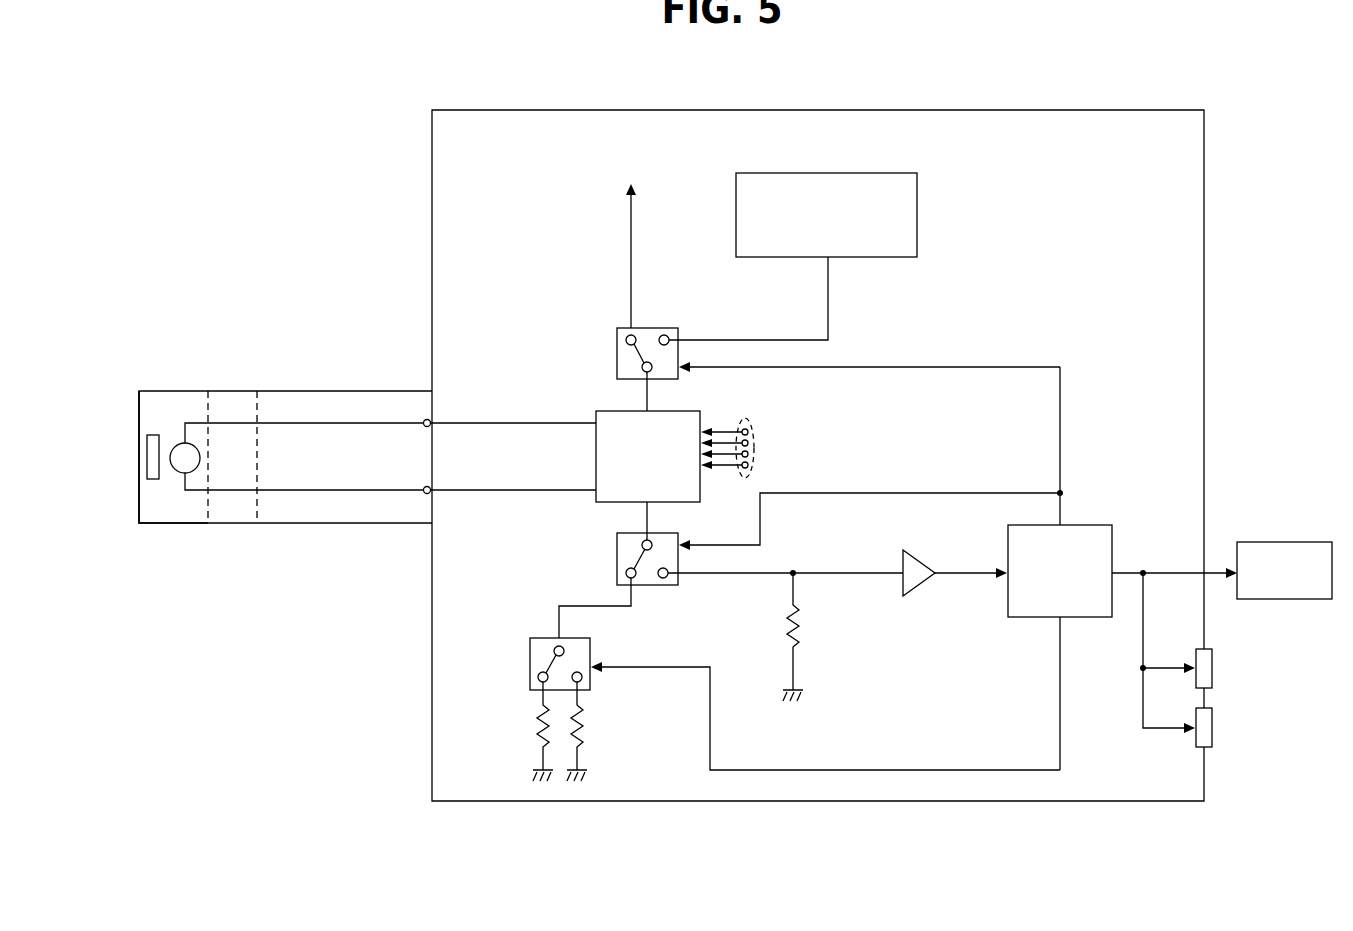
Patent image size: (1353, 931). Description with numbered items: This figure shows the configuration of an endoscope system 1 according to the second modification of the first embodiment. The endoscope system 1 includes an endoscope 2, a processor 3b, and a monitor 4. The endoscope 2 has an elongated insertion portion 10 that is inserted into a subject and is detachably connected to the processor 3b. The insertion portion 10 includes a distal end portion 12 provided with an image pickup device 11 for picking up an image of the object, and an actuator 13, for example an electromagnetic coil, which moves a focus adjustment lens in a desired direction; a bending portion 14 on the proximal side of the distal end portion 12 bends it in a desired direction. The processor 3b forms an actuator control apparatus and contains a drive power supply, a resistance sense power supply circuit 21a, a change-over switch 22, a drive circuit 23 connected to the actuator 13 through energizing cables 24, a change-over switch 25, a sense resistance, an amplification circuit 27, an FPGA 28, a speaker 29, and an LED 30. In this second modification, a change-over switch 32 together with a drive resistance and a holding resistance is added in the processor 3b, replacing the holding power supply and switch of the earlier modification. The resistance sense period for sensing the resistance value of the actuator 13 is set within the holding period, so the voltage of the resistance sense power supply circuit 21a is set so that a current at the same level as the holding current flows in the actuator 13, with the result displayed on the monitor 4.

The endoscope system 1 is at (1250, 78).
The endoscope 2 is at (353, 357).
The processor 3b is at (977, 110).
The monitor 4 is at (1287, 542).
The insertion portion 10 is at (225, 562).
The image pickup device 11 is at (153, 435).
The distal end portion 12 is at (153, 391).
The actuator 13 is at (179, 478).
The bending portion 14 is at (234, 391).
The resistance sense power supply circuit 21a is at (828, 173).
The change-over switch 22 is at (678, 329).
The drive circuit 23 is at (700, 412).
The energizing cables 24 is at (488, 423).
The change-over switch 25 is at (678, 536).
The amplification circuit 27 is at (915, 550).
The FPGA 28 is at (1112, 528).
The speaker 29 is at (1212, 660).
The LED 30 is at (1212, 720).
The change-over switch 32 is at (590, 645).